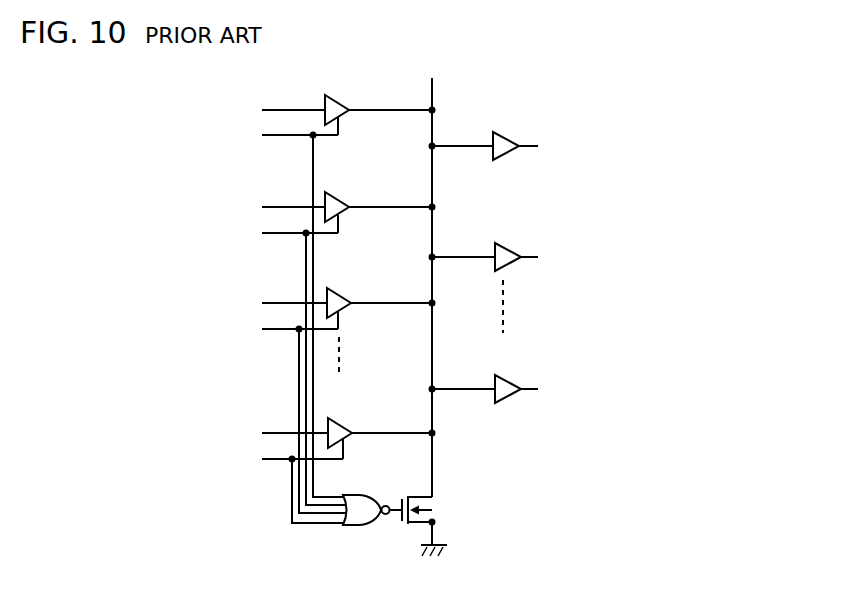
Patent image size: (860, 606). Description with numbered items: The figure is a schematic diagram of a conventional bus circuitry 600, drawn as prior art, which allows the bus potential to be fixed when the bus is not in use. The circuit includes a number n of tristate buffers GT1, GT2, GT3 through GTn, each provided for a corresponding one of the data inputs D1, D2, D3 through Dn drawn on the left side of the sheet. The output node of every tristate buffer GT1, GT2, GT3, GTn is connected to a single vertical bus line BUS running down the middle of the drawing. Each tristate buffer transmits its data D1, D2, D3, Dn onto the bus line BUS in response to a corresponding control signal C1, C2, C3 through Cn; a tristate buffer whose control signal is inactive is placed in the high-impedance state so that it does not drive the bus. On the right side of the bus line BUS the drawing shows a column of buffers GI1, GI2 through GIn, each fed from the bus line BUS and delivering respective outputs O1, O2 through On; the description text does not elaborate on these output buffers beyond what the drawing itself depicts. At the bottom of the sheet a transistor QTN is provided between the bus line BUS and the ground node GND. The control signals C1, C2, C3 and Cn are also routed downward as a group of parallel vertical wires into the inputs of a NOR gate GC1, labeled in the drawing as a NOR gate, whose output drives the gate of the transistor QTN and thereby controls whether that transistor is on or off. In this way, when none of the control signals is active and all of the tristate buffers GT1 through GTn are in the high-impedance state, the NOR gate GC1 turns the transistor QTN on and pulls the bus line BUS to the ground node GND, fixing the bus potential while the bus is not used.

The bus circuitry 600 is at (708, 46).
The bus line BUS is at (427, 259).
The tristate buffer GT1 is at (372, 100).
The tristate buffer GT2 is at (372, 198).
The tristate buffer GT3 is at (373, 294).
The tristate buffer GTn is at (374, 423).
The inverter/buffer 1 GI1 is at (485, 130).
The inverter/buffer 2 GI2 is at (485, 242).
The inverter/buffer n GIn is at (485, 373).
The NOR gate GC1 is at (369, 517).
The N-channel transistor QTN is at (442, 502).
The ground GND is at (465, 547).
The data D1 is at (269, 110).
The data D2 is at (269, 207).
The data D3 is at (270, 303).
The data Dn is at (270, 433).
The control signal C1 is at (278, 310).
The control signal C2 is at (279, 363).
The control signal C3 is at (279, 415).
The control signal Cn is at (278, 485).
The output 1 O1 is at (558, 146).
The output 2 O2 is at (558, 257).
The output n On is at (558, 389).